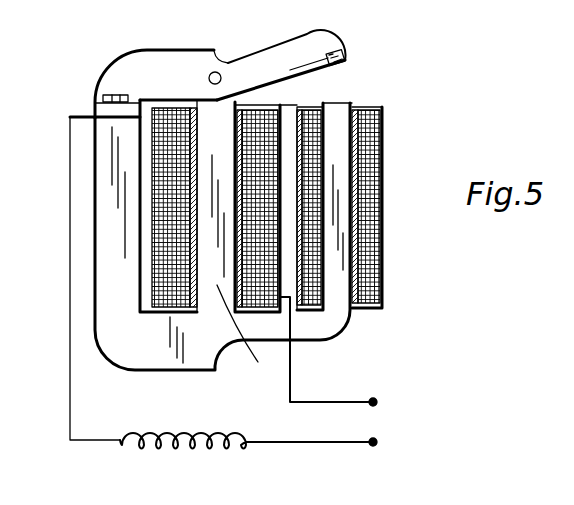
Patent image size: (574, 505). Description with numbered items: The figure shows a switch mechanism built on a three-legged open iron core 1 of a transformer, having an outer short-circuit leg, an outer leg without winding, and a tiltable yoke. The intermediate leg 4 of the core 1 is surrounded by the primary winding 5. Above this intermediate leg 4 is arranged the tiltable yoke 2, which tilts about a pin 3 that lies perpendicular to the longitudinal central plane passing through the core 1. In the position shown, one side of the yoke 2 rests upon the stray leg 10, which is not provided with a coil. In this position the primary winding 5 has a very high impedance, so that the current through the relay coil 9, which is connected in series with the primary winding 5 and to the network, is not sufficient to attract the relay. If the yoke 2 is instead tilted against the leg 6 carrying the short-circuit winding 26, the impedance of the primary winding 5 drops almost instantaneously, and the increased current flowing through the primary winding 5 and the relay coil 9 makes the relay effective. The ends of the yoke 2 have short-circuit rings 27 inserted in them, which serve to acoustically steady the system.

The iron core 1 is at (229, 350).
The tiltable yoke 2 is at (135, 58).
The pin 3 is at (217, 72).
The intermediate leg 4 is at (245, 334).
The primary winding 5 is at (272, 125).
The leg carrying the short-circuit winding 6 is at (343, 188).
The relay coil 9 is at (180, 435).
The stray leg 10 is at (102, 193).
The short-circuit winding 26 is at (373, 132).
The short-circuit rings 27 is at (112, 93).